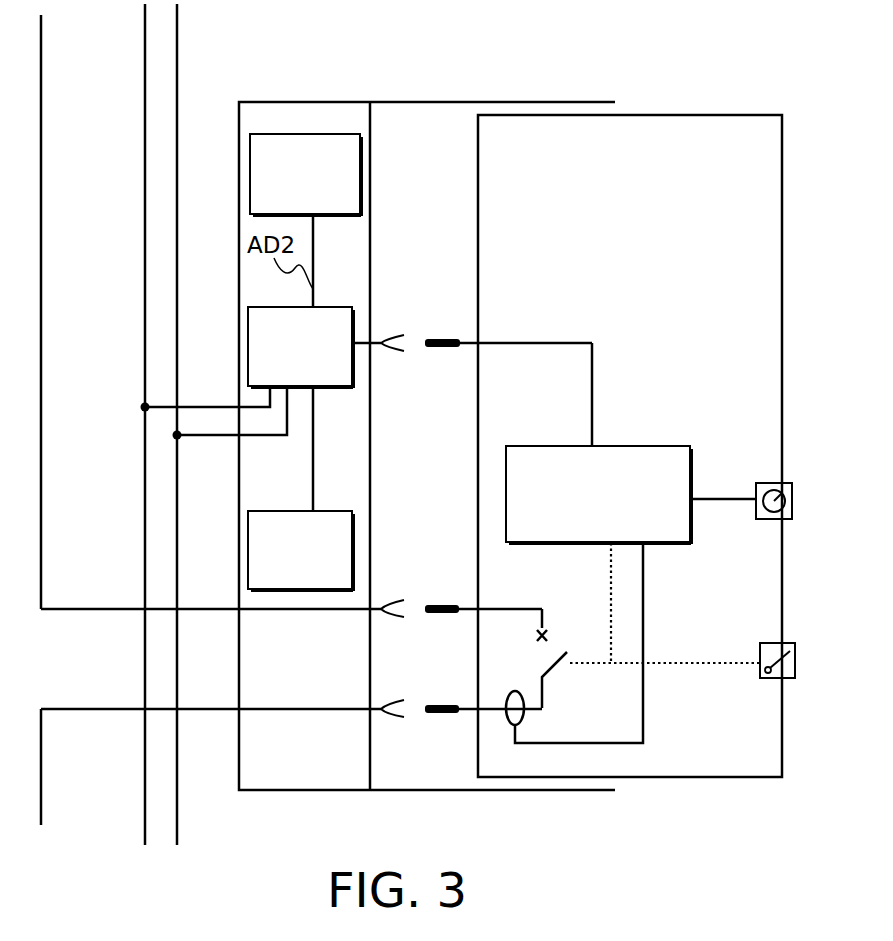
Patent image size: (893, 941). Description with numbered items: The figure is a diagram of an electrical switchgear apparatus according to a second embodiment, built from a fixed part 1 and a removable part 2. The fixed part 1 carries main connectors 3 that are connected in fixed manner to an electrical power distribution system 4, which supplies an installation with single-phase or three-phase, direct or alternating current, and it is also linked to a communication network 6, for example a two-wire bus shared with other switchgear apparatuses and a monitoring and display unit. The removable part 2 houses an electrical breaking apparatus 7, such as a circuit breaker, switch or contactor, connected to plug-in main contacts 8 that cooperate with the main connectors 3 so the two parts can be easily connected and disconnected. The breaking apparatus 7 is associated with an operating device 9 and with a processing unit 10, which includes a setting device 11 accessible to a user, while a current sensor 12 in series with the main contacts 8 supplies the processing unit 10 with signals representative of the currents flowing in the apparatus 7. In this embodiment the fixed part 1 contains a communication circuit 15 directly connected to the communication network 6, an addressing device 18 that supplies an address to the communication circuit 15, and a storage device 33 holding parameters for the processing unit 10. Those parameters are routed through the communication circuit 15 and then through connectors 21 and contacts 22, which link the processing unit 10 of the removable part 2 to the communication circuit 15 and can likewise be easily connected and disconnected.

The fixed part 1 is at (421, 102).
The removable part 2 is at (782, 258).
The main connectors 3 is at (398, 617).
The electrical power distribution system 4 is at (40, 612).
The communication network 6 is at (181, 67).
The electrical breaking apparatus 7 is at (563, 607).
The main contacts 8 is at (442, 617).
The operating device 9 is at (782, 642).
The processing unit 10 is at (693, 463).
The setting device 11 is at (781, 483).
The current sensor 12 is at (528, 716).
The communication circuit 15 is at (318, 307).
The addressing device 18 is at (288, 133).
The connectors 21 is at (386, 346).
The contacts 22 is at (451, 339).
The storage device 33 is at (282, 511).